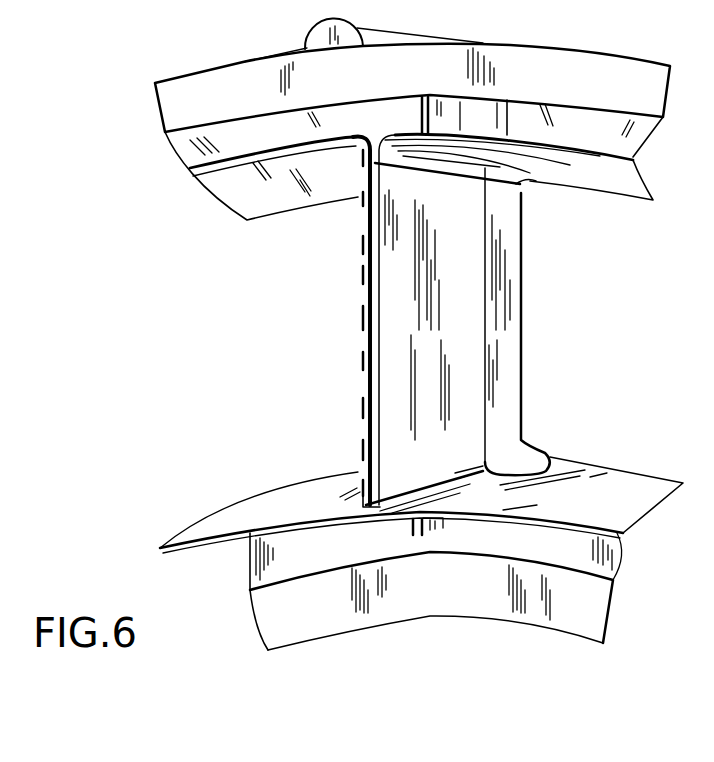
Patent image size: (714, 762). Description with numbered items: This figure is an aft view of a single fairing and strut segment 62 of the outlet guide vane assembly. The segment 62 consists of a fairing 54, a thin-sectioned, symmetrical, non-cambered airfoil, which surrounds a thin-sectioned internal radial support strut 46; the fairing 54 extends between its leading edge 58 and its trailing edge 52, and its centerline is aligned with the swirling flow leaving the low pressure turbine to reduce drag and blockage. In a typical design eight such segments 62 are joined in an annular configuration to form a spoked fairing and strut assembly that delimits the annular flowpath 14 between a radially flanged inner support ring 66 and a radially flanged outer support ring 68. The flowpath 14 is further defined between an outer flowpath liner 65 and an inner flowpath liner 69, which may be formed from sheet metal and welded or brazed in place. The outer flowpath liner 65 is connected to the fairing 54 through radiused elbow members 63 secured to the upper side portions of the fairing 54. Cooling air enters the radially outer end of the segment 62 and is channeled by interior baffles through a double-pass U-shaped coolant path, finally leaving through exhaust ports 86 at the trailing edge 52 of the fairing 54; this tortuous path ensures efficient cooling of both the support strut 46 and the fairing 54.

The annular flowpath 14 is at (575, 326).
The internal radial support strut 46 is at (447, 110).
The trailing edge 52 is at (368, 350).
The fairing 54 is at (420, 380).
The leading edge 58 is at (520, 403).
The fairing and strut segment 62 is at (222, 279).
The radiused elbow member 63 is at (512, 188).
The outer flowpath liner 65 is at (302, 200).
The inner support ring 66 is at (262, 567).
The outer support ring 68 is at (622, 25).
The inner flowpath liner 69 is at (291, 497).
The exhaust ports 86 is at (362, 313).